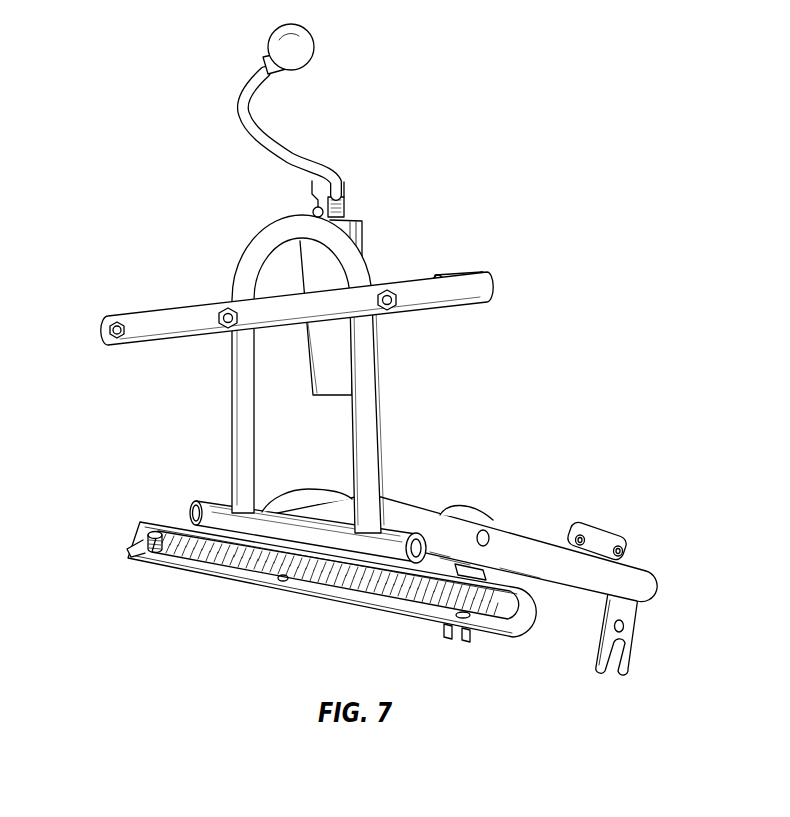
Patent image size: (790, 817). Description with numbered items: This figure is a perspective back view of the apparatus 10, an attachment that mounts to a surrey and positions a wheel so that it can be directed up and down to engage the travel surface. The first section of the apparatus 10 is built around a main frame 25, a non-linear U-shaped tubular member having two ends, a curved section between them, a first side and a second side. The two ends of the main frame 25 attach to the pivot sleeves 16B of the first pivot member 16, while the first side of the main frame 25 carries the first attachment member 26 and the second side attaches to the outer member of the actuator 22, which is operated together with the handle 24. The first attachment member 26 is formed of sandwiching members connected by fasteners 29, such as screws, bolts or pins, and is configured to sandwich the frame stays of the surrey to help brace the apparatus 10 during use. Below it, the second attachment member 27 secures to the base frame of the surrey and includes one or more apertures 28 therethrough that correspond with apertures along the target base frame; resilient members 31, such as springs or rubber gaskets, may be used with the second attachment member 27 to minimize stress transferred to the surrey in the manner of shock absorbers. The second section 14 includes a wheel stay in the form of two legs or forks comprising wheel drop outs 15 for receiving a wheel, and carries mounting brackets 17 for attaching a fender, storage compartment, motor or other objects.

The apparatus 10 is at (570, 91).
The second section 14 is at (520, 542).
The wheel drop outs 15 is at (640, 637).
The first pivot member 16 is at (414, 563).
The pivot sleeves 16B is at (278, 515).
The mounting brackets 17 is at (598, 522).
The actuator 22 is at (365, 241).
The handle 24 is at (252, 82).
The main frame 25 is at (414, 441).
The first attachment member 26 is at (268, 308).
The second attachment member 27 is at (309, 612).
The apertures 28 is at (450, 622).
The fasteners 29 is at (112, 324).
The resilient members 31 is at (138, 553).